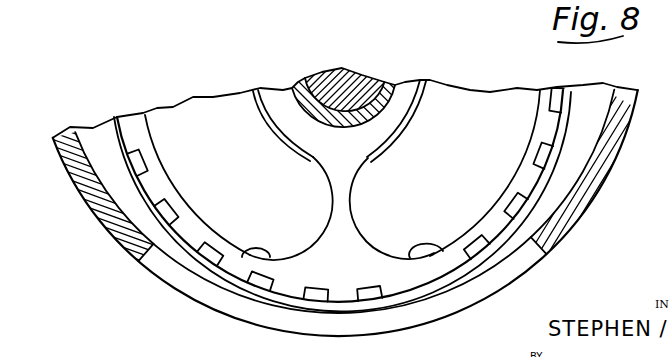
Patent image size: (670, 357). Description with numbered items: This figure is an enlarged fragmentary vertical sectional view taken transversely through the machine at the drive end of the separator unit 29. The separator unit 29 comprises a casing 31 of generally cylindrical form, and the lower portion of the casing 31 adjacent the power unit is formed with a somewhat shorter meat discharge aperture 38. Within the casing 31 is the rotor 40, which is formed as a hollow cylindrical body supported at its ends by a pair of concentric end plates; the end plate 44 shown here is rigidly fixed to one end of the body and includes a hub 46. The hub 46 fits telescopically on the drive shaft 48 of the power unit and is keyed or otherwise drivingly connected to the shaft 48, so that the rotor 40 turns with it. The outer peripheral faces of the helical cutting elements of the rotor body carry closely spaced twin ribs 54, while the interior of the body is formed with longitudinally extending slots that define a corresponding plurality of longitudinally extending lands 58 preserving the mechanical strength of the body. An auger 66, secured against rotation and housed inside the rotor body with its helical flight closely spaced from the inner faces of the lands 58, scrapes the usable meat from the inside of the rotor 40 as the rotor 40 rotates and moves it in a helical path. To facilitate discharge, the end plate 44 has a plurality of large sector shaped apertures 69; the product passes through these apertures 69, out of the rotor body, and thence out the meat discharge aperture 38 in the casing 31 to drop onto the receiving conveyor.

The separator unit 29 is at (125, 246).
The casing 31 is at (87, 187).
The meat discharge aperture 38 is at (392, 320).
The rotor 40 is at (566, 148).
The end plate 44 is at (373, 253).
The hub 46 is at (380, 90).
The drive shaft 48 is at (360, 80).
The twin ribs 54 is at (207, 260).
The lands 58 is at (140, 167).
The auger 66 is at (468, 207).
The sector shaped apertures 69 is at (250, 260).